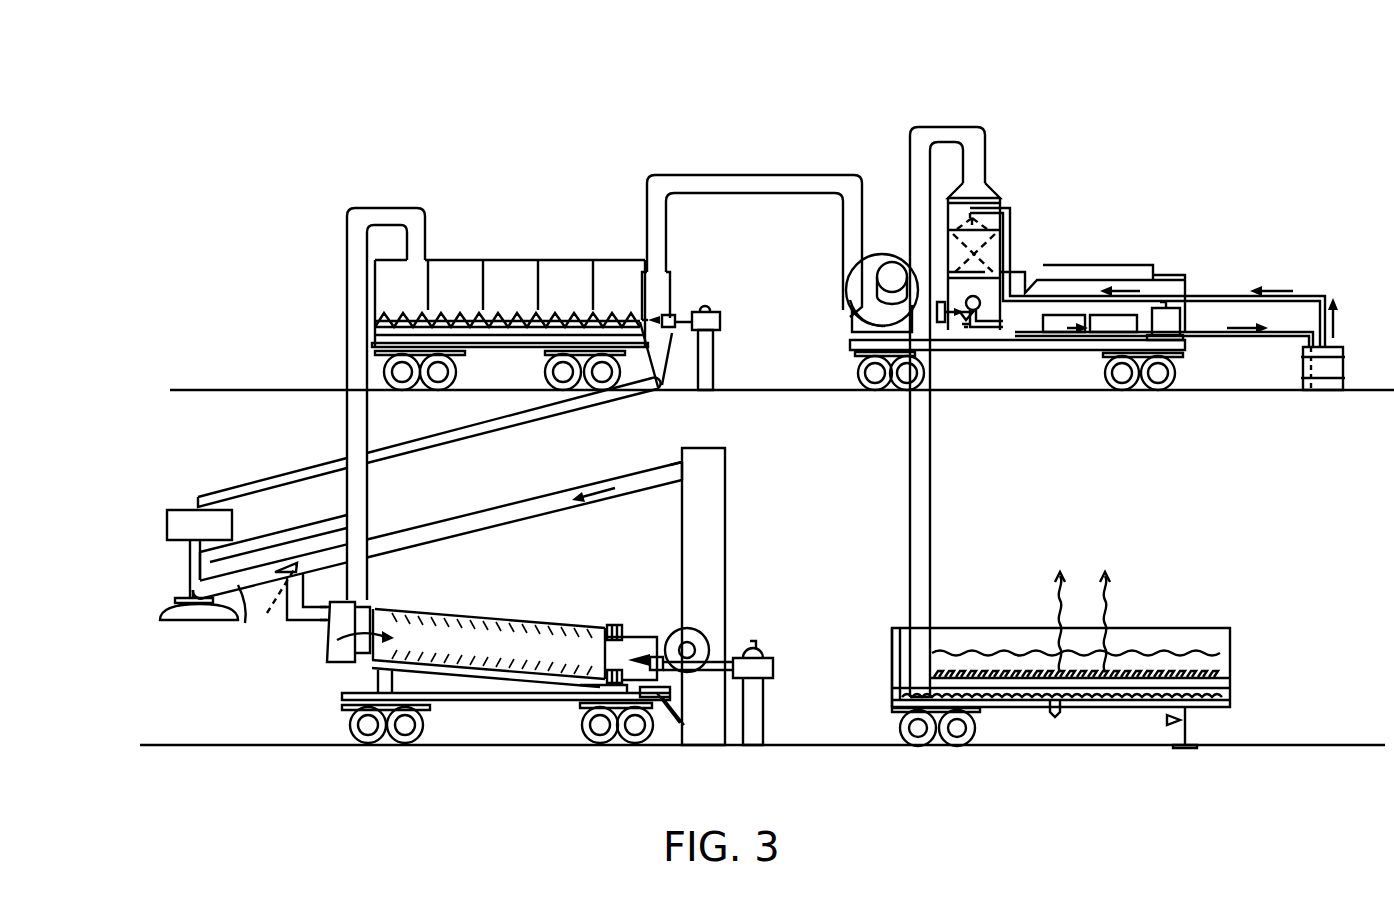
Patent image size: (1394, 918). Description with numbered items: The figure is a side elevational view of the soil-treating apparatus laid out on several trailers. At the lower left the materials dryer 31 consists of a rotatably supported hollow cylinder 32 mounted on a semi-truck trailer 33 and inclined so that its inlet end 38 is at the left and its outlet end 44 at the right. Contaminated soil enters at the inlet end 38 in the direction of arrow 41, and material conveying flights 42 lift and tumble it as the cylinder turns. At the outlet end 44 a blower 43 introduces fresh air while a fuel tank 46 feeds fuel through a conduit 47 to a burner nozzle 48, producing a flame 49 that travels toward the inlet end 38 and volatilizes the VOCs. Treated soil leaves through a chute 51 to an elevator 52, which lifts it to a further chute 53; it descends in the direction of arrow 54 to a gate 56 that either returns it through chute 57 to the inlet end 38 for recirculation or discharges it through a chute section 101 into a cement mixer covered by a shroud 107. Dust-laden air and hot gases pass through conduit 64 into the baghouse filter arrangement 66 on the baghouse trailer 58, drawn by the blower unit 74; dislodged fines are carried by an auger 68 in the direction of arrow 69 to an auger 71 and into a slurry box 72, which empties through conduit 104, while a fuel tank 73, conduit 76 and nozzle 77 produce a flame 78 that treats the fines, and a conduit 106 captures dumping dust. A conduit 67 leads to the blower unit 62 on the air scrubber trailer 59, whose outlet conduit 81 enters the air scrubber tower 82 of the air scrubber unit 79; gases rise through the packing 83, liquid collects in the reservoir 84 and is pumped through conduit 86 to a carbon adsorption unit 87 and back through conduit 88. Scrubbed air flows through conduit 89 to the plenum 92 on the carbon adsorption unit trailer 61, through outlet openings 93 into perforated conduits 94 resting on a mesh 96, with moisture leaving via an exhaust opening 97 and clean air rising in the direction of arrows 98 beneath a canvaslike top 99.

The materials dryer 31 is at (495, 604).
The hollow cylinder 32 is at (440, 604).
The semi-truck trailer 33 is at (335, 700).
The inlet end 38 is at (382, 602).
The arrow 41 is at (332, 645).
The material conveying flights 42 is at (533, 620).
The blower 43 is at (700, 640).
The outlet end 44 is at (622, 618).
The fuel tank 46 is at (764, 718).
The conduit 47 is at (712, 672).
The burner nozzle 48 is at (668, 632).
The flame 49 is at (648, 646).
The chute 51 is at (672, 700).
The elevator 52 is at (730, 515).
The chute 53 is at (666, 470).
The arrow 54 is at (590, 490).
The gate 56 is at (265, 615).
The chute 57 is at (307, 612).
The baghouse trailer 58 is at (368, 330).
The air scrubber trailer 59 is at (845, 345).
The carbon adsorption unit trailer 61 is at (886, 700).
The blower unit 62 is at (845, 280).
The conduit 64 is at (347, 418).
The baghouse filter arrangement 66 is at (487, 246).
The conduit 67 is at (738, 182).
The auger 68 is at (515, 310).
The arrow 69 is at (628, 333).
The auger 71 is at (470, 432).
The slurry box 72 is at (183, 515).
The fuel tank 73 is at (713, 366).
The blower unit 74 is at (674, 256).
The conduit 76 is at (702, 312).
The nozzle 77 is at (674, 316).
The flame 78 is at (650, 316).
The air scrubber unit 79 is at (1075, 215).
The outlet conduit 81 is at (945, 322).
The air scrubber tower 82 is at (995, 190).
The packing 83 is at (995, 242).
The reservoir 84 is at (965, 337).
The conduit 86 is at (1215, 338).
The carbon adsorption unit 87 is at (1342, 362).
The conduit 88 is at (1210, 296).
The conduit 89 is at (948, 130).
The plenum 92 is at (930, 640).
The outlet openings 93 is at (936, 685).
The perforated conduit 94 is at (1010, 685).
The mesh 96 is at (1232, 692).
The exhaust opening 97 is at (1058, 712).
The arrows 98 is at (1105, 575).
The canvaslike top 99 is at (1210, 628).
The chute section 101 is at (244, 626).
The conduit 104 is at (190, 566).
The conduit 106 is at (275, 531).
The shroud 107 is at (182, 615).